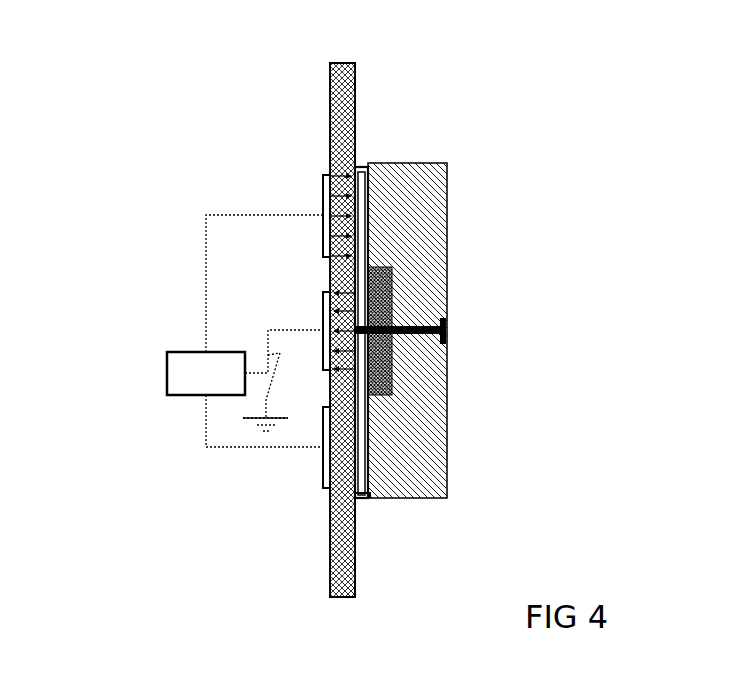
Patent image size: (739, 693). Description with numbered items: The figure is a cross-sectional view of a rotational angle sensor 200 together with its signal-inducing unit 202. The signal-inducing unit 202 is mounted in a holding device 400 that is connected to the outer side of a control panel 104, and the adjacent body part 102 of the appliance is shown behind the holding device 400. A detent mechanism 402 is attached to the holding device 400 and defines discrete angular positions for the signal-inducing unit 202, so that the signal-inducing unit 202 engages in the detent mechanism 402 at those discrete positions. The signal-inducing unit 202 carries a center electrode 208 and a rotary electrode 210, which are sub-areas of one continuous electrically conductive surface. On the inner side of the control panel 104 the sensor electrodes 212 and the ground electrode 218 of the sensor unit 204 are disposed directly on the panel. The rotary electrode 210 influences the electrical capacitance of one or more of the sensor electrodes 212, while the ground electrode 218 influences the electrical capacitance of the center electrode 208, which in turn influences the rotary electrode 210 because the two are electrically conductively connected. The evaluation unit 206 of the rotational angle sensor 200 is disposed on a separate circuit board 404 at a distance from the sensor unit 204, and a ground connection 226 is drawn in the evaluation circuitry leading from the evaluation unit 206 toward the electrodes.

The rotational angle sensor 200 is at (170, 160).
The sensor unit 204 is at (301, 138).
The control panel 104 is at (330, 557).
The vehicle body component 102 is at (447, 243).
The signal-inducing unit 202 is at (371, 138).
The rotary electrode 210 is at (362, 183).
The detent mechanism 402 is at (392, 285).
The center electrode 208 is at (395, 345).
The holding device 400 is at (372, 498).
The sensor electrodes 212 is at (323, 197).
The ground electrode 218 is at (323, 310).
The circuit board 404 is at (173, 296).
The evaluation unit 206 is at (167, 352).
The ground connection / switch 226 is at (250, 428).